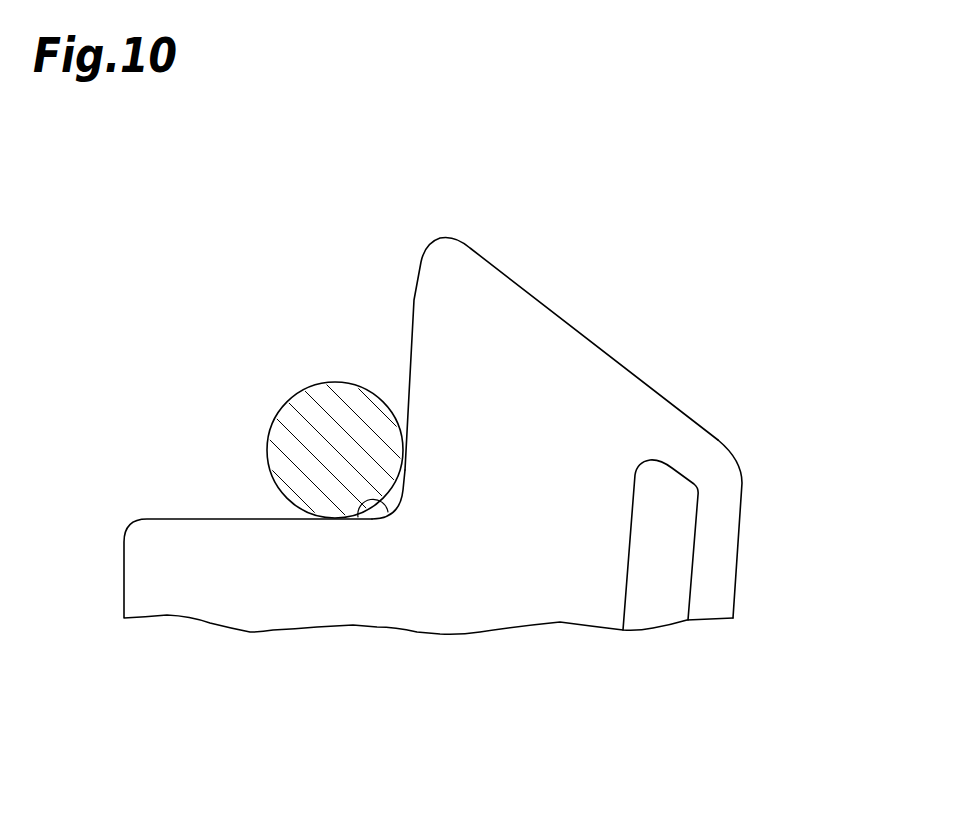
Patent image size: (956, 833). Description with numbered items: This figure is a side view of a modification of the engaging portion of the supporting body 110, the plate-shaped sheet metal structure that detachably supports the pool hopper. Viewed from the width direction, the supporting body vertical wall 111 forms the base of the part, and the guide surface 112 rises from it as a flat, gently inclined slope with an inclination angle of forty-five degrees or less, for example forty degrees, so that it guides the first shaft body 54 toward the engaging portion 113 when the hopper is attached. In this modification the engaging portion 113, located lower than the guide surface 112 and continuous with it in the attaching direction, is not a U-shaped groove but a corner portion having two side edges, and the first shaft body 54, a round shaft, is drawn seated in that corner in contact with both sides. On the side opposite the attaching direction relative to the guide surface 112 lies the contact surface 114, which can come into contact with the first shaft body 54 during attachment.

The first shaft body 54 is at (335, 382).
The supporting body 110 is at (624, 266).
The supporting body vertical wall 111 is at (247, 608).
The guide surface 112 is at (622, 363).
The engaging portion 113 is at (360, 505).
The contact surface 114 is at (742, 563).